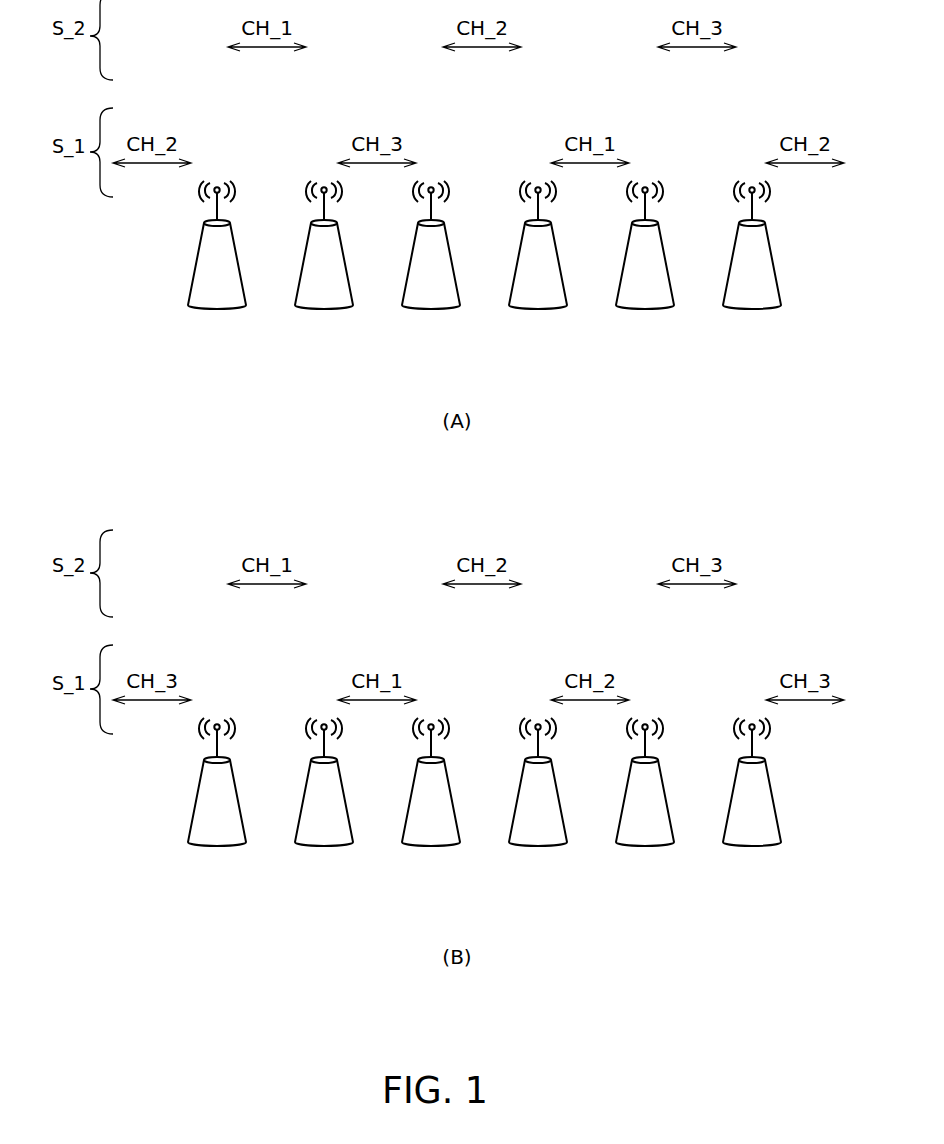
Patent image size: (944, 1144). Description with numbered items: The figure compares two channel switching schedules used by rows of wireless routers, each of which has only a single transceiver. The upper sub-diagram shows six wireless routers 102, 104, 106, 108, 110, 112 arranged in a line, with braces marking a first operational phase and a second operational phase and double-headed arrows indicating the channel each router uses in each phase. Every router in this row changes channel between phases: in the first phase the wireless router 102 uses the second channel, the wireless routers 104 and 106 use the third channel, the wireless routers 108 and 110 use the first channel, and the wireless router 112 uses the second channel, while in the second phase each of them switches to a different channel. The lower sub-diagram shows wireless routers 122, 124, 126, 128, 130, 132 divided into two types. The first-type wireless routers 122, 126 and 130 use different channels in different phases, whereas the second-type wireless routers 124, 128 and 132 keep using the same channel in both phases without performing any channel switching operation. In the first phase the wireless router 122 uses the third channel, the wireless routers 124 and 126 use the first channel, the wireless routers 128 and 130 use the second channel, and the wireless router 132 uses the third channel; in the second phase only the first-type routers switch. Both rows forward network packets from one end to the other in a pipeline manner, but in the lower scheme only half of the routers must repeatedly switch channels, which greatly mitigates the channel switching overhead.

The wireless router 102 is at (214, 310).
The wireless router 104 is at (321, 310).
The wireless router 106 is at (428, 310).
The wireless router 108 is at (535, 310).
The wireless router 110 is at (642, 310).
The wireless router 112 is at (749, 310).
The wireless router 122 is at (214, 847).
The wireless router 124 is at (321, 847).
The wireless router 126 is at (428, 847).
The wireless router 128 is at (535, 847).
The wireless router 130 is at (642, 847).
The wireless router 132 is at (749, 847).